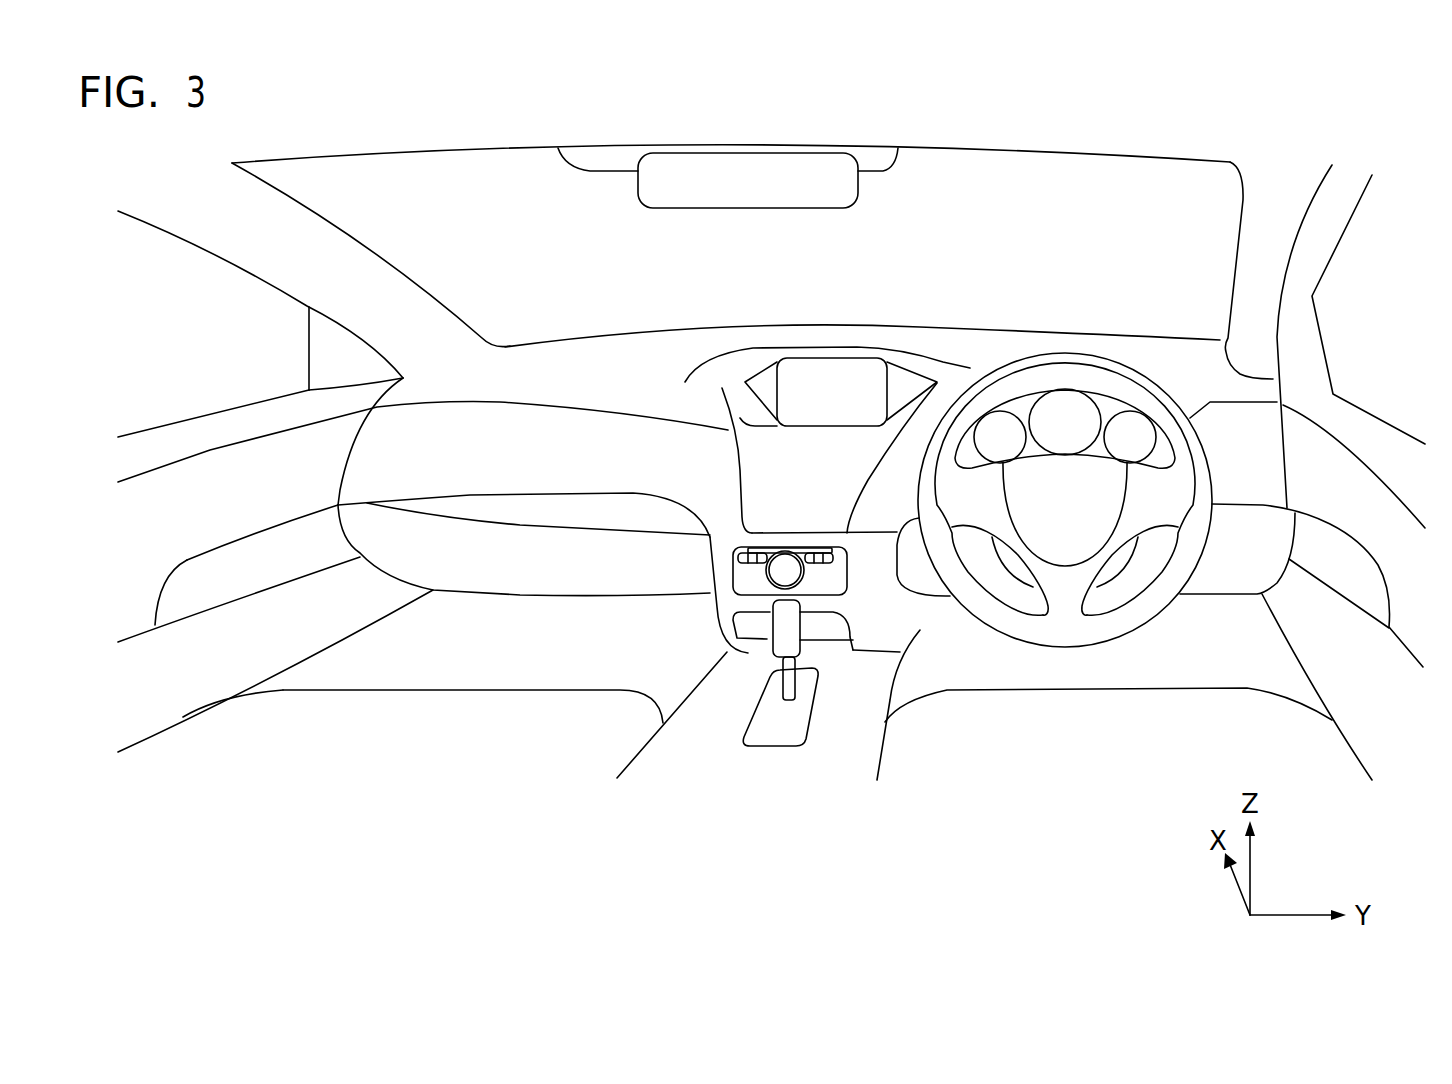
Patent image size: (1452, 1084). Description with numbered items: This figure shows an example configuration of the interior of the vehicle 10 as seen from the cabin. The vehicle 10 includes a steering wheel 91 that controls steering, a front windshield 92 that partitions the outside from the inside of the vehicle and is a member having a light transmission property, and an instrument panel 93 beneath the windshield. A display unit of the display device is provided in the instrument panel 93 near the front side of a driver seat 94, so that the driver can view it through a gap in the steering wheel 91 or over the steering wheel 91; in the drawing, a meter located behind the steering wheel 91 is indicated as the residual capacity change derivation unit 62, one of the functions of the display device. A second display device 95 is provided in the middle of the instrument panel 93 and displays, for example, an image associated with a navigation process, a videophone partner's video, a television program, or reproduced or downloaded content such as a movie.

The vehicle 10 is at (655, 655).
The residual capacity change derivation unit 62 is at (1068, 412).
The steering wheel 91 is at (1147, 620).
The front windshield 92 is at (844, 277).
The instrument panel 93 is at (675, 368).
The driver seat 94 is at (1124, 753).
The second display device 95 is at (848, 408).